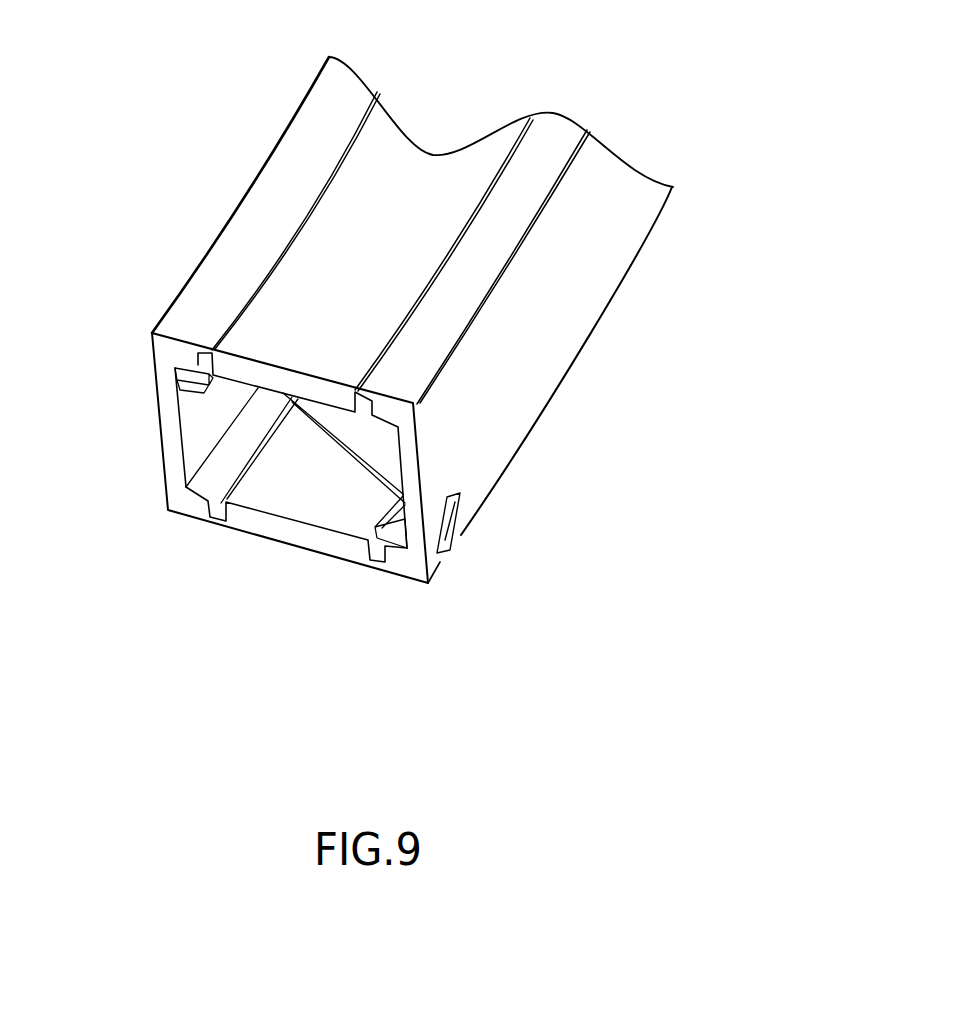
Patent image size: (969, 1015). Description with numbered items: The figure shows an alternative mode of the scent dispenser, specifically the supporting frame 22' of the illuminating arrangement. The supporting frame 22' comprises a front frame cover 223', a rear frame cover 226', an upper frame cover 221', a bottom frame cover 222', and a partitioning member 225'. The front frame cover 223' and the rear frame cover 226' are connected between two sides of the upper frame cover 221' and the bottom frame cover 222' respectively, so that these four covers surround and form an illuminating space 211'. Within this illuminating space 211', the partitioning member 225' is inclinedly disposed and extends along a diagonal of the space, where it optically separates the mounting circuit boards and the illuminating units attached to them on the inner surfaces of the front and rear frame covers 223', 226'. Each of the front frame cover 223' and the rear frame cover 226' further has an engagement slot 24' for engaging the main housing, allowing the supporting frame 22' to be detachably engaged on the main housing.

The supporting frame 22' is at (429, 320).
The upper frame cover 221' is at (385, 204).
The bottom frame cover 222' is at (296, 609).
The front frame cover 223' is at (135, 435).
The partitioning member 225' is at (317, 518).
The rear frame cover 226' is at (559, 267).
The illuminating space 211' is at (134, 544).
The engagement slot 24' is at (509, 554).